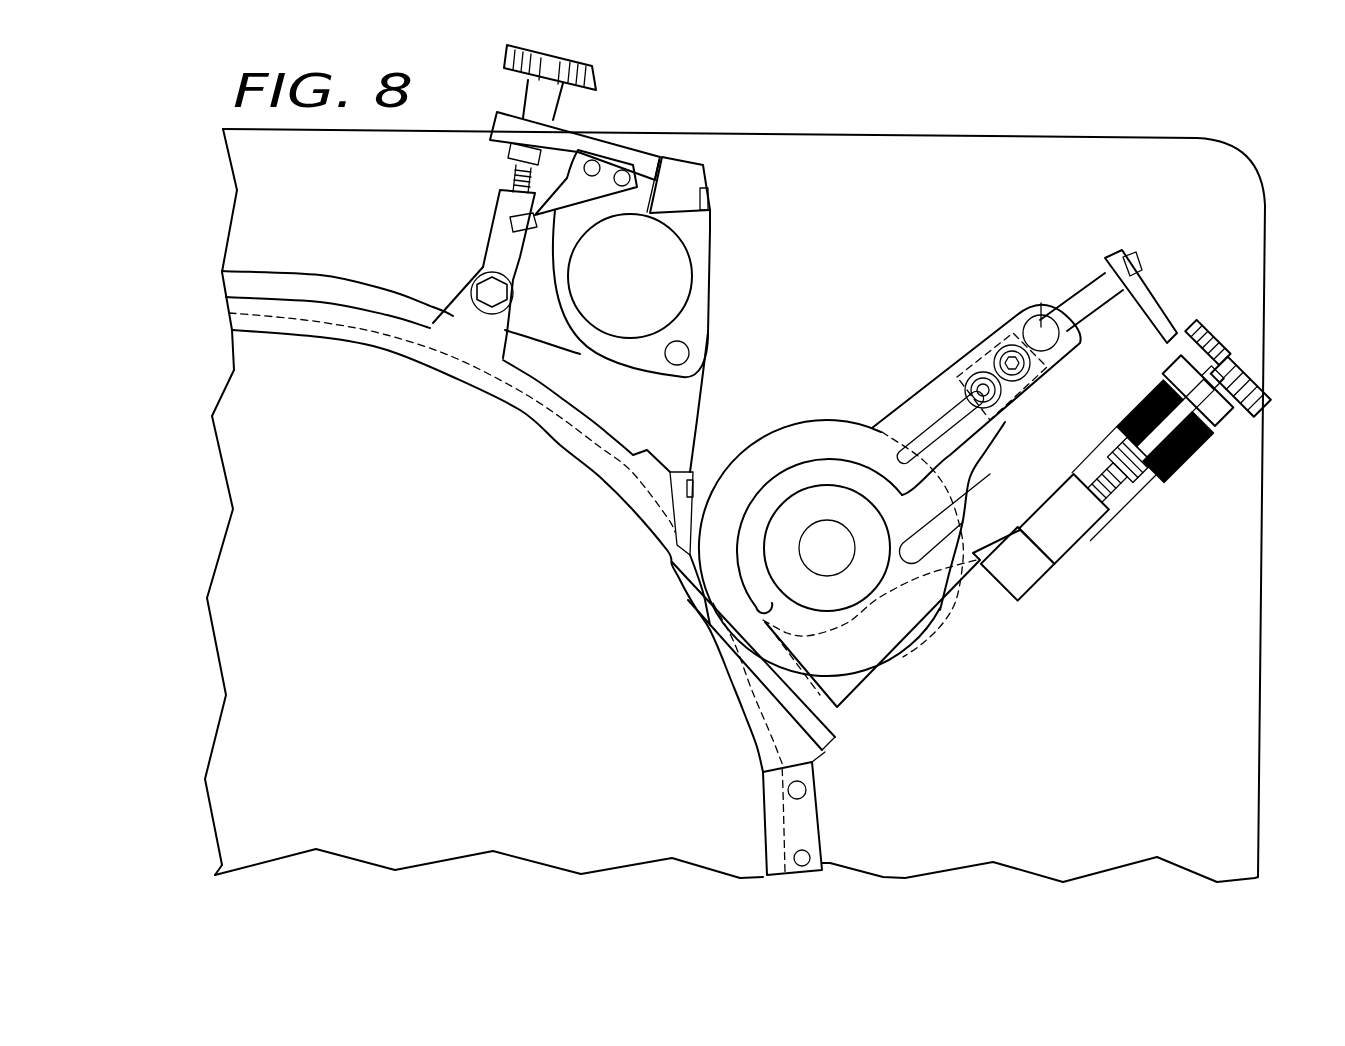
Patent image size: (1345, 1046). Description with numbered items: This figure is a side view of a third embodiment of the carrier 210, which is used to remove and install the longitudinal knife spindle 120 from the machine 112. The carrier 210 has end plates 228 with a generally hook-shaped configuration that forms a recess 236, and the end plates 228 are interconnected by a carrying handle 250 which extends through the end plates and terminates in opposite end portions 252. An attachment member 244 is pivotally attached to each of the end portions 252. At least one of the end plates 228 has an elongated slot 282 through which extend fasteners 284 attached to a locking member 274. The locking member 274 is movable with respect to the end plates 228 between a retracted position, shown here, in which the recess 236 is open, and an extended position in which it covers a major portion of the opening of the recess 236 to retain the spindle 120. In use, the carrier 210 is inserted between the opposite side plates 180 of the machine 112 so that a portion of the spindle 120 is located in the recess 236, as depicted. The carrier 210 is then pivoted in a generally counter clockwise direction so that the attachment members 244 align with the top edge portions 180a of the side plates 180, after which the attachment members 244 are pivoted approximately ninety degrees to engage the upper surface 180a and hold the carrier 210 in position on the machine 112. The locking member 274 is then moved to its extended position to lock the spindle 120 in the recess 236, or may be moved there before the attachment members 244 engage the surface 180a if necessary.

The machine 112 is at (718, 93).
The longitudinal knife spindle 120 is at (875, 658).
The side plates 180 is at (1232, 171).
The top edge portions of the side plates 180a is at (993, 133).
The carrier 210 is at (1045, 397).
The end plates 228 is at (925, 400).
The recess 236 is at (790, 477).
The attachment member 244 is at (1147, 298).
The carrying handle 250 is at (1041, 316).
The end portions 252 is at (1087, 297).
The locking member 274 is at (990, 440).
The elongated slot 282 is at (947, 408).
The fasteners 284 is at (982, 372).